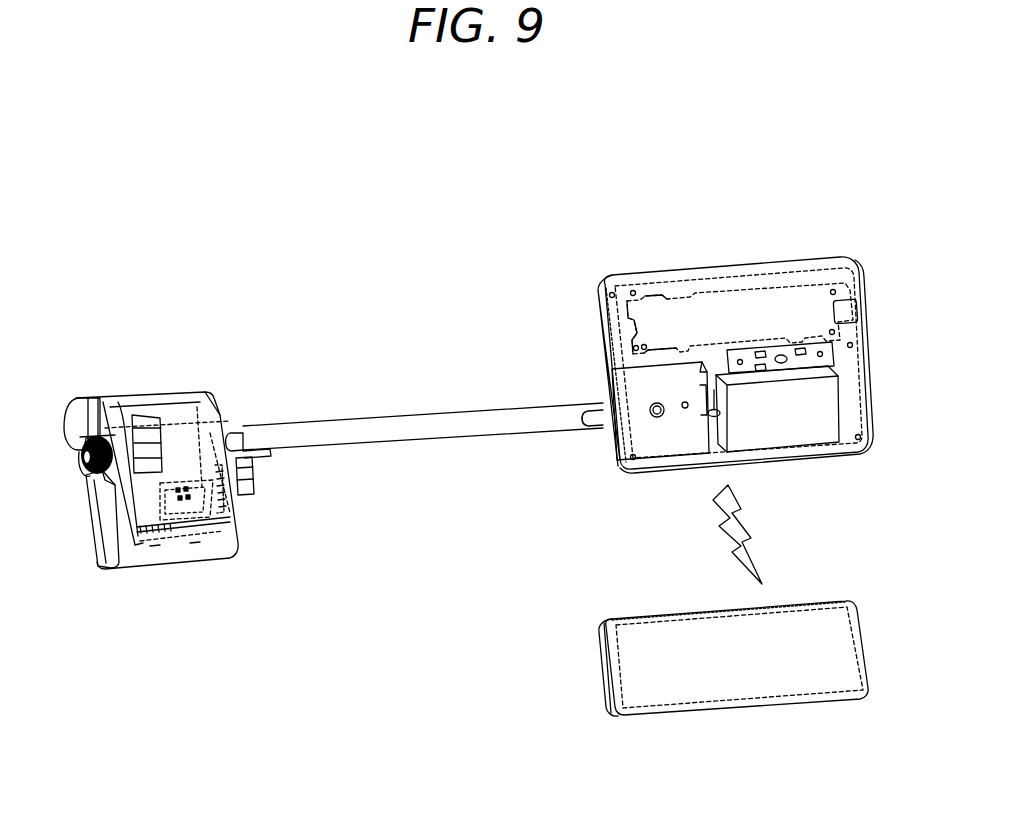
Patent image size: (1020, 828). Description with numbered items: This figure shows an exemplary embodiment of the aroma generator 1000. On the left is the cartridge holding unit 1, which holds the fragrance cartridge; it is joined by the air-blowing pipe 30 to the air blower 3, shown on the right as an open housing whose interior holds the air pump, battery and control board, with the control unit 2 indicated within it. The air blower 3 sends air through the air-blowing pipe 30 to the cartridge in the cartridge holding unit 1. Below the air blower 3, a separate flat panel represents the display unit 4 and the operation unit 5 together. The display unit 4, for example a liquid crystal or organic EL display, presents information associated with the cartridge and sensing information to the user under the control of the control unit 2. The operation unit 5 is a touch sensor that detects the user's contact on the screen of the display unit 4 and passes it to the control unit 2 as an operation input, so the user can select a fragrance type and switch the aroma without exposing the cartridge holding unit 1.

The aroma generator 1000 is at (516, 175).
The cartridge holding unit 1 is at (187, 367).
The control unit 2 is at (660, 322).
The air blower 3 is at (803, 235).
The air-blowing pipe 30 is at (430, 445).
The display unit 4 is at (815, 582).
The operation unit 5 is at (736, 658).